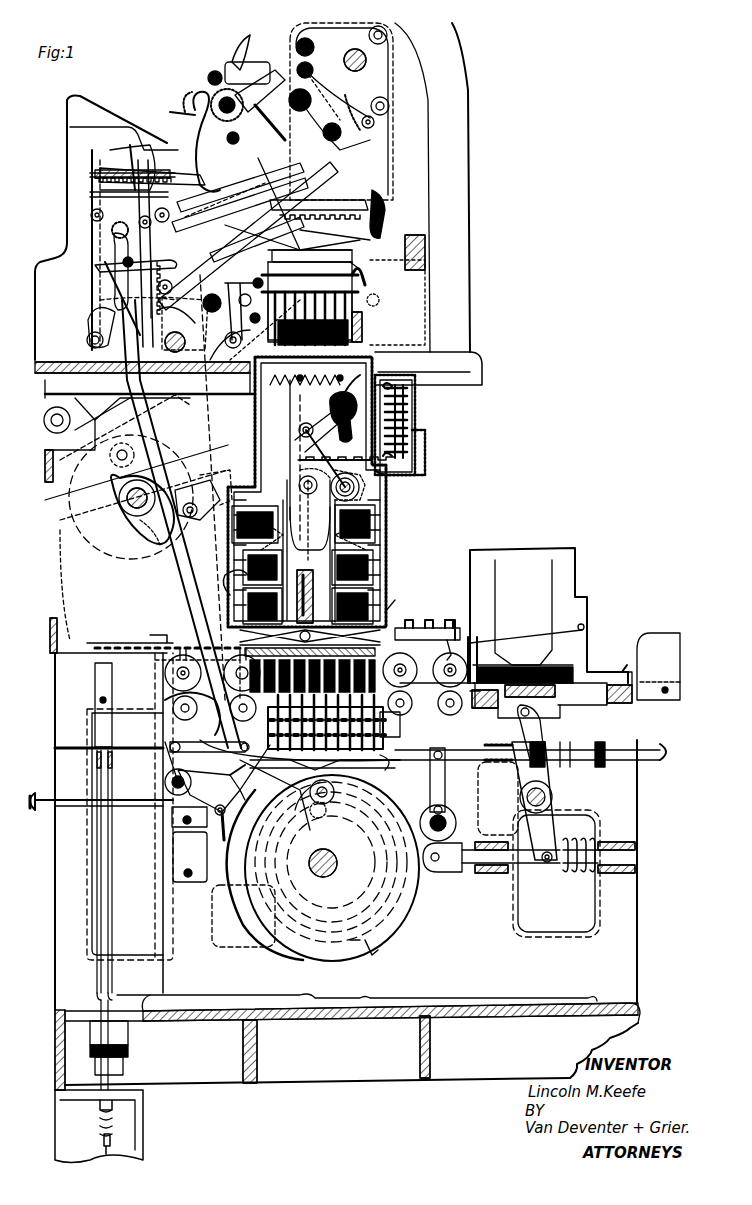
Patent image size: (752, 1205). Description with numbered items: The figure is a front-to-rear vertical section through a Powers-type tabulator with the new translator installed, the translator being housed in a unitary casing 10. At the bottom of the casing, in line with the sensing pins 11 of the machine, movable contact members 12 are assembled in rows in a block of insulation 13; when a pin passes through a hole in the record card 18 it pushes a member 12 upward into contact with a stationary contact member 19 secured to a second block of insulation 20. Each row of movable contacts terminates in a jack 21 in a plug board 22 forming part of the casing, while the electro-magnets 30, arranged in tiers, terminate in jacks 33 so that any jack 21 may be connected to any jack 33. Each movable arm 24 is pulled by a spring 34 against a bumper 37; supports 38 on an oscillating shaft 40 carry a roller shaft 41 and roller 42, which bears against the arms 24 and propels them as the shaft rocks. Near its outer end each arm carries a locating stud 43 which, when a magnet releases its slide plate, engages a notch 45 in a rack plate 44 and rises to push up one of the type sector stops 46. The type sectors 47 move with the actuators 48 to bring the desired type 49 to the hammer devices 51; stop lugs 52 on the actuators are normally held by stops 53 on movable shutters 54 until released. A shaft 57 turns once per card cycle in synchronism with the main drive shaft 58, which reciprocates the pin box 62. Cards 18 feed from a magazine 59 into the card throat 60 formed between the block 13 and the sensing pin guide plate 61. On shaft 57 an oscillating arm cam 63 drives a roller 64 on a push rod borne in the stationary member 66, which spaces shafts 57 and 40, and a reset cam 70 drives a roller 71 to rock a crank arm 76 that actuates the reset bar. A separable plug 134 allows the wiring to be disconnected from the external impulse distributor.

The casing 10 is at (385, 500).
The sensing pins 11 is at (326, 722).
The movable contact members 12 is at (405, 626).
The block of insulation 13 is at (448, 625).
The record card 18 is at (230, 700).
The stationary contact member 19 is at (402, 593).
The block of insulation 20 is at (181, 524).
The jack 21 is at (410, 452).
The plug board 22 is at (420, 428).
The movable arm 24 is at (296, 418).
The electro-magnets 30 is at (235, 590).
The jacks 33 is at (410, 420).
The spring 34 is at (300, 457).
The bumper 37 is at (355, 381).
The support 38 is at (302, 441).
The oscillating shaft 40 is at (365, 483).
The roller shaft 41 is at (328, 417).
The roller 42 is at (306, 412).
The stud 43 is at (308, 368).
The rack plate 44 is at (301, 374).
The notches 45 is at (331, 368).
The type sector stops 46 is at (355, 332).
The type sectors 47 is at (170, 113).
The actuators 48 is at (319, 218).
The type 49 is at (196, 100).
The hammer devices 51 is at (110, 168).
The stop lugs 52 is at (355, 258).
The stops 53 is at (358, 264).
The movable shutters 54 is at (340, 278).
The shaft 57 is at (118, 497).
The main drive shaft 58 is at (330, 868).
The magazine 59 is at (568, 667).
The card throat 60 is at (418, 676).
The sensing pin guide plate 61 is at (412, 703).
The pin box 62 is at (402, 722).
The cam 63 is at (140, 516).
The roller 64 is at (210, 490).
The stationary member 66 is at (190, 470).
The reset cam 70 is at (152, 550).
The roller 71 is at (200, 522).
The crank arm 76 is at (300, 481).
The separable plug 134 is at (378, 380).